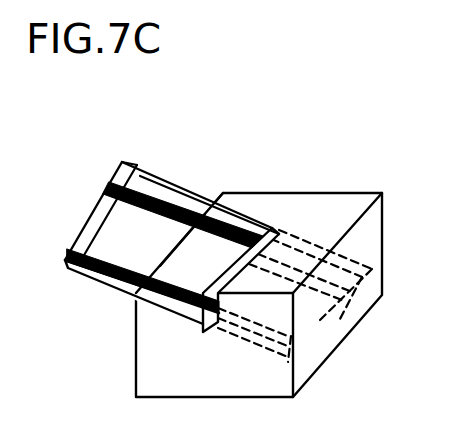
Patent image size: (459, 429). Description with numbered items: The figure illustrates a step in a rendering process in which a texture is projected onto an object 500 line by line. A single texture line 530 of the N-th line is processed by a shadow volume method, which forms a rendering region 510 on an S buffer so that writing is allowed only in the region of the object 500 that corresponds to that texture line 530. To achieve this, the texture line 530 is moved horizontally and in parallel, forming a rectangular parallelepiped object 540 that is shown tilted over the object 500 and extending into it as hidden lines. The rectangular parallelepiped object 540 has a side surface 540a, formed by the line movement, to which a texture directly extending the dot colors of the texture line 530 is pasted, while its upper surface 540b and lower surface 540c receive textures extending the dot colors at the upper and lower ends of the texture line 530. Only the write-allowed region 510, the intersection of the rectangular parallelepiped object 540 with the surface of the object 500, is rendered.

The object 500 is at (373, 193).
The rendering region 510 is at (280, 238).
The texture line 530 is at (130, 162).
The rectangular parallelepiped object 540 is at (202, 219).
The side surface 540a is at (198, 205).
The upper surface 540b is at (153, 170).
The lower surface 540c is at (103, 285).